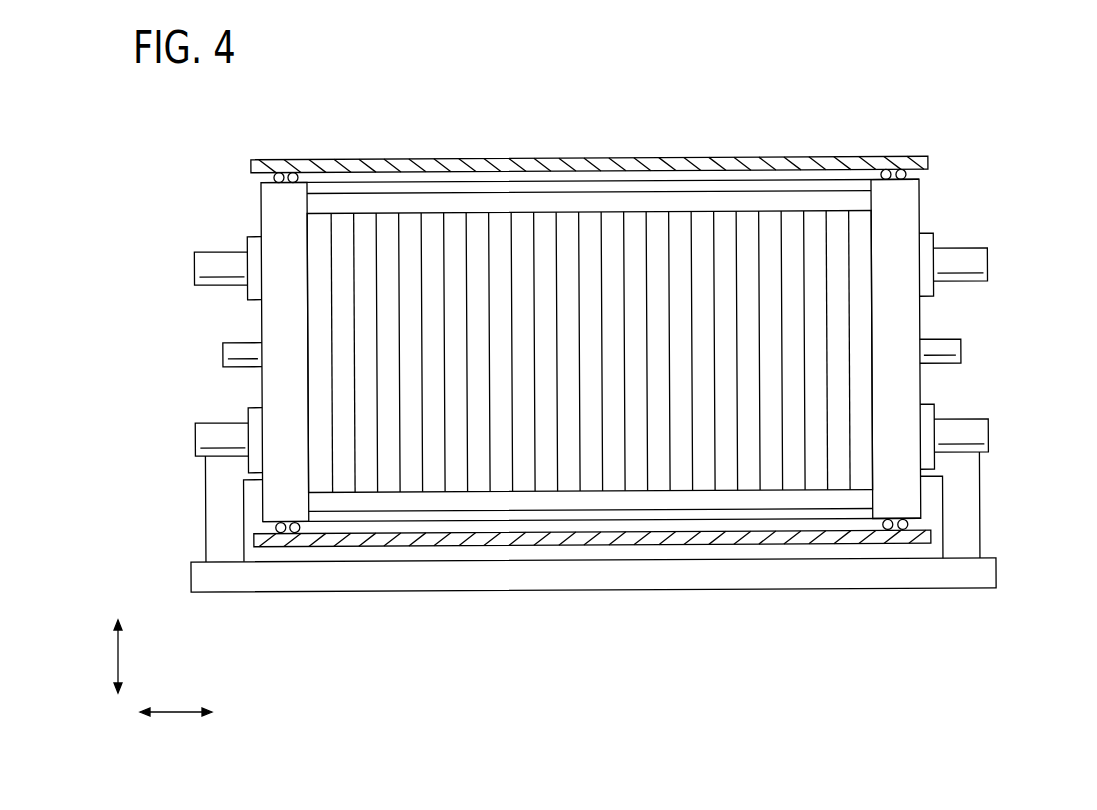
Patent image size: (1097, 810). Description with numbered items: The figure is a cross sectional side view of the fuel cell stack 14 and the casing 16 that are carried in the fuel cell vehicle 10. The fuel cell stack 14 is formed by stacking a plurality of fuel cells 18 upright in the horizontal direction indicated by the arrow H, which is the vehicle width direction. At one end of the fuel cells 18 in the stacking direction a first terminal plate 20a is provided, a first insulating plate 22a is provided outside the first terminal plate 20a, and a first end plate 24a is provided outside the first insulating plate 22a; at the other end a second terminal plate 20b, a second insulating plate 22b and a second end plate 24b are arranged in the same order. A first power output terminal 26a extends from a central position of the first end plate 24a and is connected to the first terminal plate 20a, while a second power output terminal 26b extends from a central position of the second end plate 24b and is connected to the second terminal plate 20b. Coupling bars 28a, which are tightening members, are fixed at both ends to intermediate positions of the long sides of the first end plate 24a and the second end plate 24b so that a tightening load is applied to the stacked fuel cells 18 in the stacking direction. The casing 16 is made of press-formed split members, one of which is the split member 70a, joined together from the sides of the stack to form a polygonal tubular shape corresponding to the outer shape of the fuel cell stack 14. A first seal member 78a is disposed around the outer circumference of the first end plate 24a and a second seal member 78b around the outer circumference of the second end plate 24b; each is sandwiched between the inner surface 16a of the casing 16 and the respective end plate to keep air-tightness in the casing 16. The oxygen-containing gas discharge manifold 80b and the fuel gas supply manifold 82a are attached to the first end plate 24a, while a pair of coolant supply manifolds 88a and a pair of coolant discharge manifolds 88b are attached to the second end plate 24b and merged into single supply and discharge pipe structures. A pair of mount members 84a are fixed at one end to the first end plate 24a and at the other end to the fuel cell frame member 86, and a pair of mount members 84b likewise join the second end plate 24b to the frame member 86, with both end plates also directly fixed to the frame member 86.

The fuel cell vehicle 10 is at (182, 133).
The fuel cell stack 14 is at (690, 171).
The casing 16 is at (638, 158).
The inner surface 16a is at (754, 176).
The fuel cells 18 is at (523, 222).
The first terminal plate 20a is at (352, 240).
The second terminal plate 20b is at (838, 222).
The first insulating plate 22a is at (327, 222).
The second insulating plate 22b is at (860, 228).
The first end plate 24a is at (262, 315).
The second end plate 24b is at (920, 310).
The first power output terminal 26a is at (228, 351).
The second power output terminal 26b is at (960, 345).
The coupling bars 28a is at (592, 190).
The split member 70a is at (433, 157).
The first seal member 78a is at (284, 184).
The second seal member 78b is at (896, 183).
The oxygen-containing gas discharge manifold 80b is at (210, 437).
The fuel gas supply manifold 82a is at (208, 263).
The mount members 84a is at (205, 519).
The mount members 84b is at (963, 512).
The fuel cell frame member 86 is at (311, 578).
The coolant supply manifolds 88a is at (975, 258).
The coolant discharge manifolds 88b is at (975, 432).